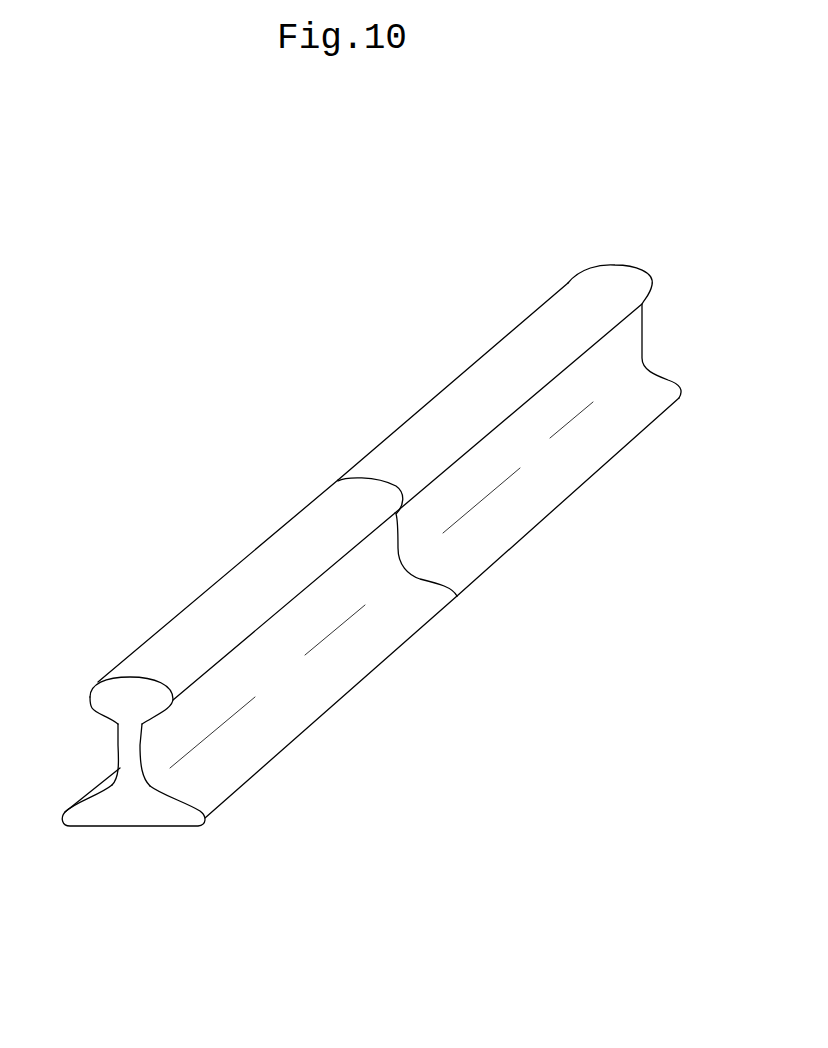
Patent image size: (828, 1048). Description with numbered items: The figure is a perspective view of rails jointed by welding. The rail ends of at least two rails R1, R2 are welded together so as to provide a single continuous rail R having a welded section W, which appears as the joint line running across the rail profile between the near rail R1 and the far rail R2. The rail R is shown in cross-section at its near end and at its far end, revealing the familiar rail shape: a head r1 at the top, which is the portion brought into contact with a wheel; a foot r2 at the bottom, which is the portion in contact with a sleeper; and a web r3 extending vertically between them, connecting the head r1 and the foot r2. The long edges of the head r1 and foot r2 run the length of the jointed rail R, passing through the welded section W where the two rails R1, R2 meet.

The rail R is at (371, 582).
The rail R1 is at (259, 680).
The rail R2 is at (517, 323).
The head r1 is at (150, 652).
The foot r2 is at (164, 812).
The web r3 is at (205, 703).
The welded section W is at (397, 527).